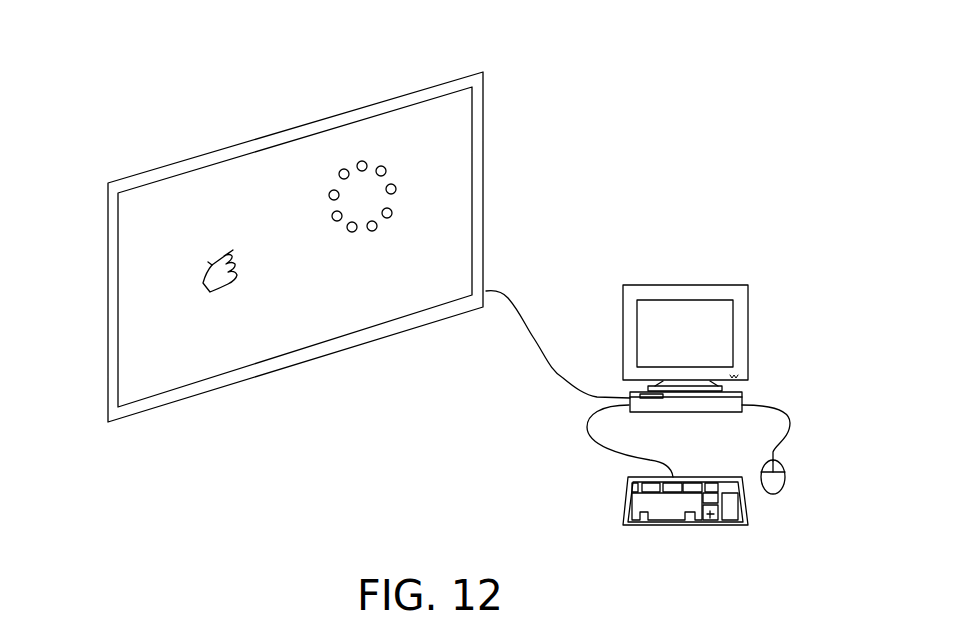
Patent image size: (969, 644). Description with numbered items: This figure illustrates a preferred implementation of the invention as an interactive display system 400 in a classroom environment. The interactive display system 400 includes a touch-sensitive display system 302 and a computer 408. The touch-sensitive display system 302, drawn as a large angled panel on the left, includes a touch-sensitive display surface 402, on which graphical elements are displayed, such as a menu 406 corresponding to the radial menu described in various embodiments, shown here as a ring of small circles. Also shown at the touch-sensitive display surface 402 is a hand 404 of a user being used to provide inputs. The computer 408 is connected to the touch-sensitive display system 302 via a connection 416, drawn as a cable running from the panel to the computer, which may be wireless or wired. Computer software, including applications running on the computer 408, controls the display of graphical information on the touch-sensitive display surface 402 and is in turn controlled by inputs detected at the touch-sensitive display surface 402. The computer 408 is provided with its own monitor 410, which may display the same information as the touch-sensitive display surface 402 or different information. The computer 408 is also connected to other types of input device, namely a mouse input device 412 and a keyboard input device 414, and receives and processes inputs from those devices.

The interactive display system 400 is at (682, 49).
The touch-sensitive display system 302 is at (108, 208).
The touch-sensitive display surface 402 is at (330, 327).
The hand 404 is at (228, 290).
The menu 406 is at (314, 200).
The computer 408 is at (707, 413).
The monitor 410 is at (723, 330).
The mouse input device 412 is at (785, 483).
The keyboard input device 414 is at (627, 498).
The connection 416 is at (510, 295).